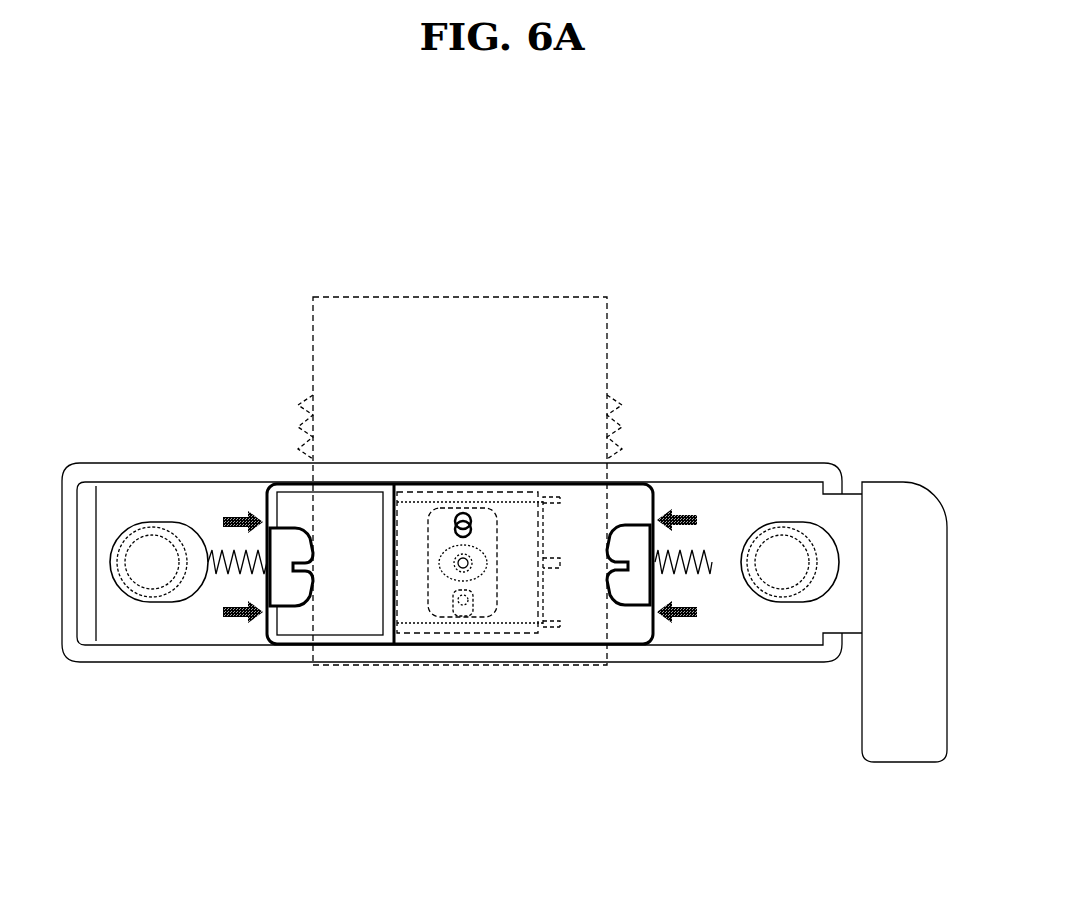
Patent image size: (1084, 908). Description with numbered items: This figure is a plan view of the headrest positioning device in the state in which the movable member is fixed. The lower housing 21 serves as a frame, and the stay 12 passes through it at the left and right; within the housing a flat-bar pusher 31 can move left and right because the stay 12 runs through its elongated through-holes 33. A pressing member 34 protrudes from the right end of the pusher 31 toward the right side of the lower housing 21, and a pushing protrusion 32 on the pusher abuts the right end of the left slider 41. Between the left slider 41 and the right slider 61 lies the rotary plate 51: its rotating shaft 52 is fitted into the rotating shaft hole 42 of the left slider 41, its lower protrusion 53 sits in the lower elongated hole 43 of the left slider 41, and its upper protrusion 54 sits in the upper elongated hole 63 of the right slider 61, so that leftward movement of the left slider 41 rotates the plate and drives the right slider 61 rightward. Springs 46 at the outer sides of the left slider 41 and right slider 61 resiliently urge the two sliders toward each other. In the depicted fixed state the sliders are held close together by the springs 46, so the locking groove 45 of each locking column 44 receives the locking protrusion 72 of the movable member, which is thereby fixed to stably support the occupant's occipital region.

The stay 12 is at (150, 600).
The lower housing 21 is at (98, 472).
The pusher 31 is at (137, 503).
The pushing protrusion 32 is at (548, 608).
The elongated through-holes 33 is at (190, 592).
The pressing member 34 is at (903, 493).
The left slider 41 is at (293, 626).
The rotating shaft hole 42 is at (498, 553).
The lower elongated hole 43 is at (476, 600).
The locking column 44 is at (640, 593).
The locking groove 45 is at (292, 545).
The springs 46 is at (220, 545).
The rotary plate 51 is at (487, 595).
The rotating shaft 52 is at (455, 567).
The lower protrusion 53 is at (462, 612).
The upper protrusion 54 is at (458, 508).
The right slider 61 is at (617, 615).
The upper elongated hole 63 is at (474, 527).
The locking protrusion 72 is at (612, 398).